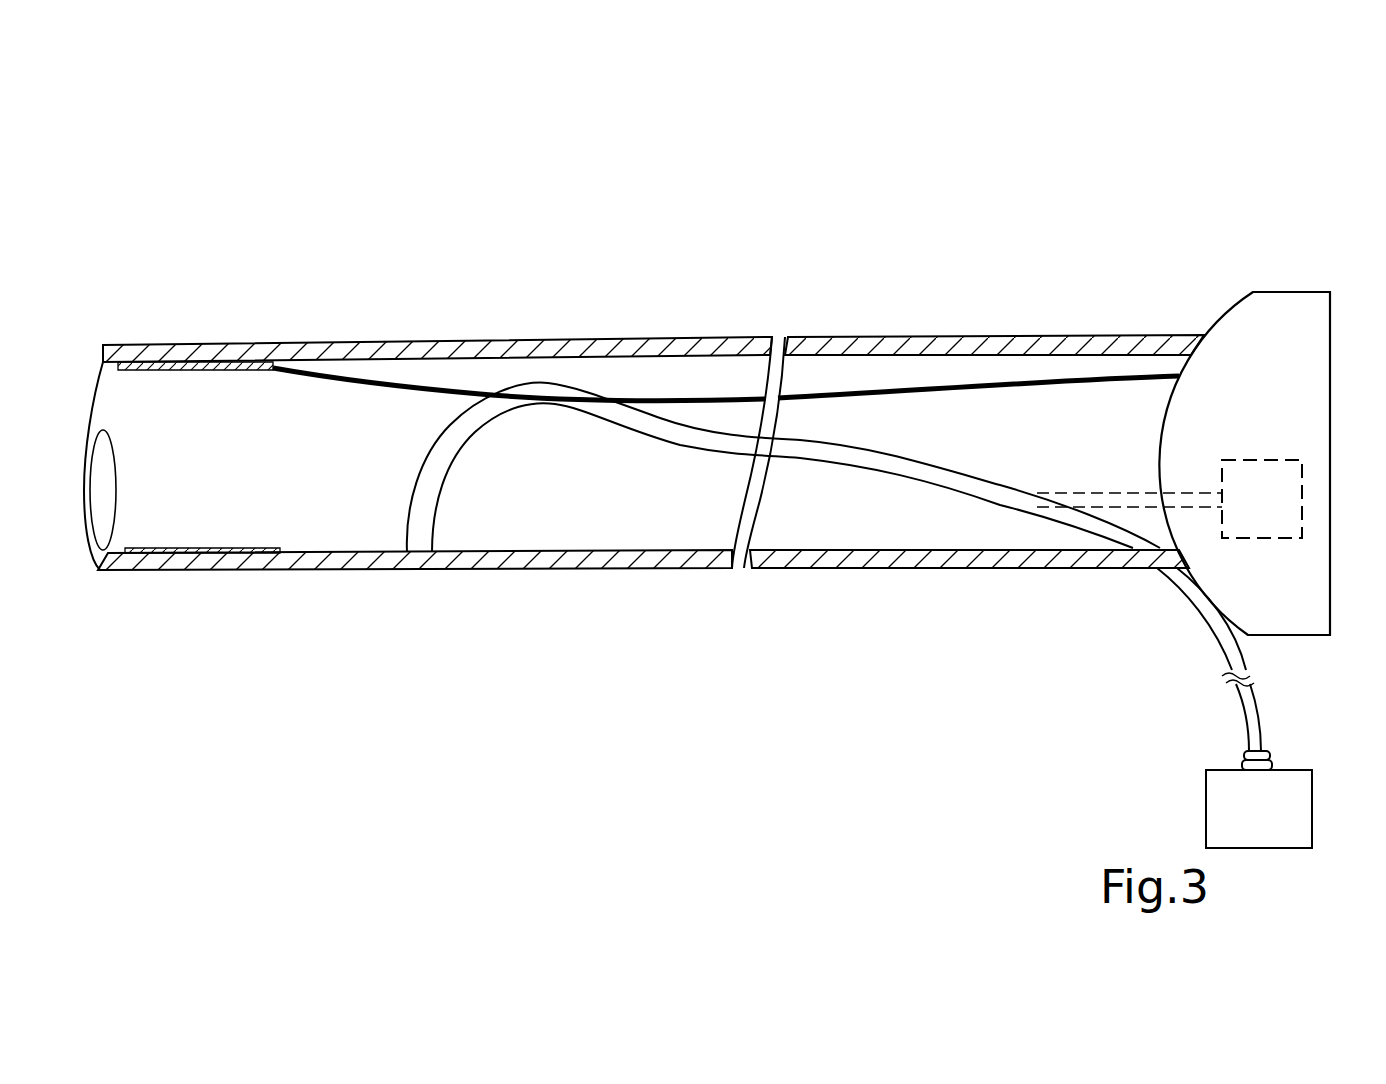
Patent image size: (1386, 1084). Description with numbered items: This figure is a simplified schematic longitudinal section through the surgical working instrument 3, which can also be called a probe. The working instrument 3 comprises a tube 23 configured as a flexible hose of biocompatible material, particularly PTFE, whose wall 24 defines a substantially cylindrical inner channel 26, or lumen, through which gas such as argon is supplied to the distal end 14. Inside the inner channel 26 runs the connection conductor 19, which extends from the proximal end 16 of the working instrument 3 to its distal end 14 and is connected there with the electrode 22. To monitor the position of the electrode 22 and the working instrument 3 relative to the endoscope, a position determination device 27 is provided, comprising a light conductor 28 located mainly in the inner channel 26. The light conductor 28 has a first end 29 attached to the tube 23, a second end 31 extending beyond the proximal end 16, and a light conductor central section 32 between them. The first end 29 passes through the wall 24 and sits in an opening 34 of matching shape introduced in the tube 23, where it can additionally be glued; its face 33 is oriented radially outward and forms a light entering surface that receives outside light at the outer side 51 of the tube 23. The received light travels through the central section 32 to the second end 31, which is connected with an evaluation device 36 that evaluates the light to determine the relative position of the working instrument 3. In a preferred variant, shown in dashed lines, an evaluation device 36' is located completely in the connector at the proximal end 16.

The working instrument 3 is at (278, 238).
The distal end 14 is at (147, 323).
The proximal end 16 is at (1307, 263).
The connection conductor 19 is at (410, 388).
The electrode 22 is at (212, 363).
The tube 23 is at (543, 342).
The wall 24 is at (943, 347).
The inner channel 26 is at (1033, 418).
The position determination device 27 is at (380, 592).
The light conductor 28 is at (460, 437).
The first end 29 is at (400, 530).
The second end 31 is at (1257, 733).
The light conductor central section 32 is at (923, 468).
The face 33 is at (420, 572).
The opening 34 is at (440, 572).
The evaluation device 36 is at (1259, 809).
The evaluation device 36' is at (1169, 499).
The outer side 51 is at (873, 337).